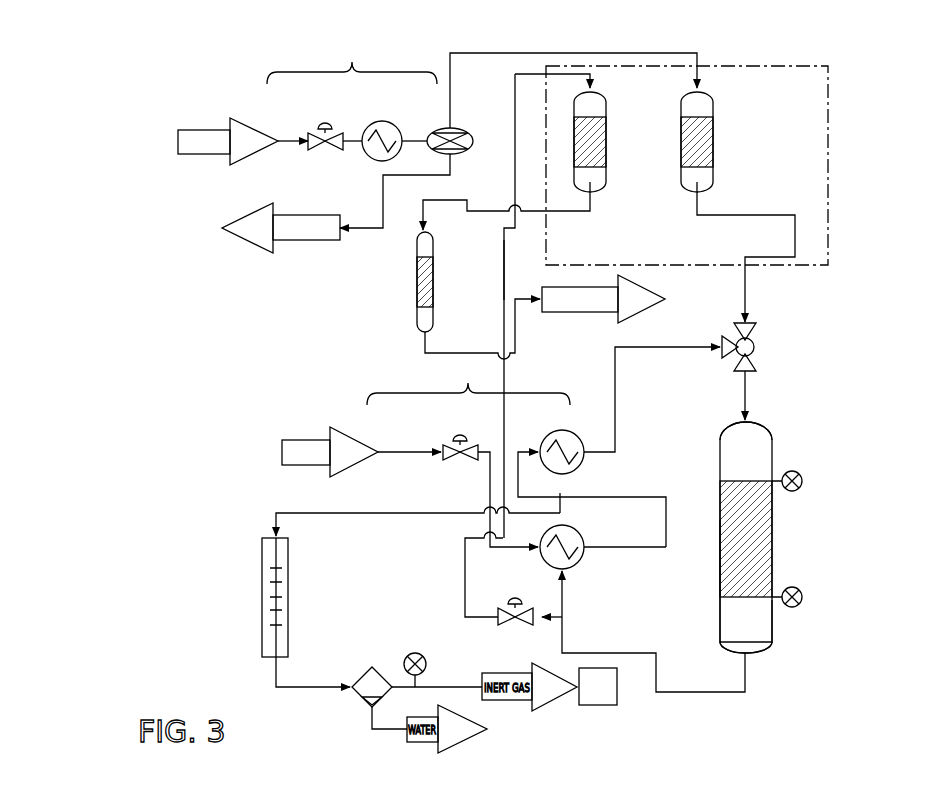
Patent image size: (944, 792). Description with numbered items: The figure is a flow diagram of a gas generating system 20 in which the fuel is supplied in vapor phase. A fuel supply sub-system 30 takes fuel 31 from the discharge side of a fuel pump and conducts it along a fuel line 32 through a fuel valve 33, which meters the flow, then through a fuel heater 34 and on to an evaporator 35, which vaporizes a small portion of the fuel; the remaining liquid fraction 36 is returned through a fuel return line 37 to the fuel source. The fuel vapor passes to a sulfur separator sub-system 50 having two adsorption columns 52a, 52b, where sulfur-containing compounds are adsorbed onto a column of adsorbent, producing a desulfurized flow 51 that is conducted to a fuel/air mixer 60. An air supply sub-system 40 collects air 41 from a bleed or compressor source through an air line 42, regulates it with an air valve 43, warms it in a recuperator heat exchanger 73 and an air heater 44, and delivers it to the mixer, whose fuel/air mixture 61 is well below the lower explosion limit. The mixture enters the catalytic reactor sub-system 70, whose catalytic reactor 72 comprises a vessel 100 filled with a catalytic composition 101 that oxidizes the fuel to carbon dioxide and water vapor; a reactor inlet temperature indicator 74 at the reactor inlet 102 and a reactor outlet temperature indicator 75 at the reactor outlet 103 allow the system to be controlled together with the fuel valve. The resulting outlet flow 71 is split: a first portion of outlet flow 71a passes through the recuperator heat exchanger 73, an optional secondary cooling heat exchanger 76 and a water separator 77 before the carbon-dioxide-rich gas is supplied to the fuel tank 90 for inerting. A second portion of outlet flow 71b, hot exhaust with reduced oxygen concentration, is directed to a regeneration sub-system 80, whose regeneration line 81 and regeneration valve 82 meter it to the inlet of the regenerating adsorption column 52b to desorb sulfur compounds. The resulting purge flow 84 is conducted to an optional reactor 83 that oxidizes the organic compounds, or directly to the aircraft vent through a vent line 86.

The gas generating system 20 is at (126, 166).
The fuel supply sub-system 30 is at (352, 61).
The fuel 31 is at (203, 155).
The fuel line 32 is at (283, 140).
The fuel valve 33 is at (325, 126).
The fuel heater 34 is at (382, 121).
The evaporator 35 is at (440, 128).
The remaining liquid fraction 36 is at (244, 243).
The fuel return line 37 is at (382, 200).
The air supply sub-system 40 is at (468, 384).
The air 41 is at (300, 440).
The air line 42 is at (421, 451).
The air valve 43 is at (460, 437).
The air heater 44 is at (548, 436).
The sulfur separator sub-system 50 is at (714, 64).
The desulfurized flow 51 is at (748, 284).
The adsorption column 52a is at (681, 158).
The adsorption column 52b is at (606, 128).
The fuel/air mixer 60 is at (756, 346).
The fuel/air mixture 61 is at (749, 396).
The catalytic reactor sub-system 70 is at (773, 566).
The outlet flow 71 is at (748, 680).
The first portion of outlet flow 71a is at (564, 598).
The second portion of outlet flow 71b is at (514, 192).
The catalytic reactor 72 is at (762, 520).
The recuperator heat exchanger 73 is at (568, 533).
The reactor inlet temperature indicator 74 is at (802, 481).
The reactor outlet temperature indicator 75 is at (802, 597).
The secondary cooling heat exchanger 76 is at (288, 594).
The water separator 77 is at (368, 678).
The regeneration sub-system 80 is at (503, 275).
The regeneration line 81 is at (555, 620).
The regeneration valve 82 is at (515, 602).
The optional reactor 83 is at (417, 284).
The purge flow 84 is at (577, 214).
The vent line 86 is at (524, 302).
The fuel tank 90 is at (598, 686).
The vessel 100 is at (714, 468).
The catalytic composition 101 is at (720, 566).
The reactor inlet 102 is at (745, 436).
The reactor outlet 103 is at (745, 646).